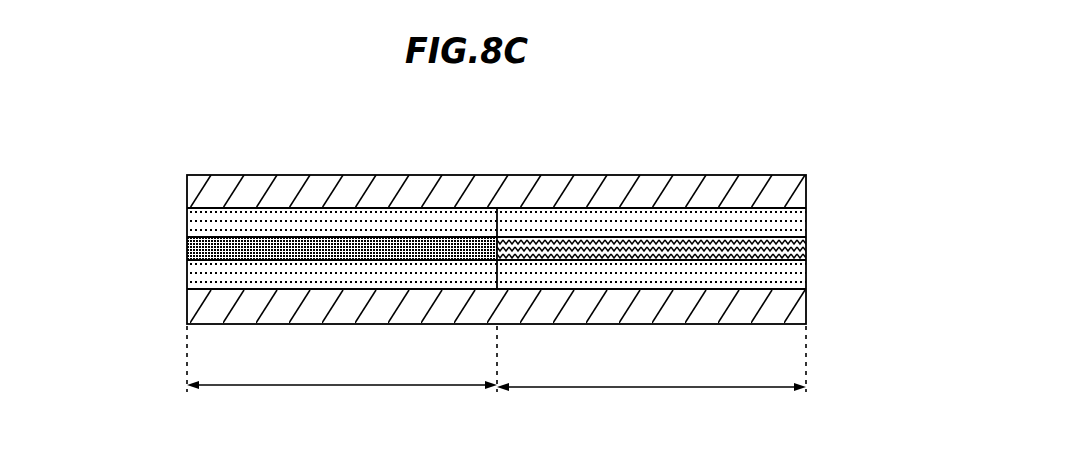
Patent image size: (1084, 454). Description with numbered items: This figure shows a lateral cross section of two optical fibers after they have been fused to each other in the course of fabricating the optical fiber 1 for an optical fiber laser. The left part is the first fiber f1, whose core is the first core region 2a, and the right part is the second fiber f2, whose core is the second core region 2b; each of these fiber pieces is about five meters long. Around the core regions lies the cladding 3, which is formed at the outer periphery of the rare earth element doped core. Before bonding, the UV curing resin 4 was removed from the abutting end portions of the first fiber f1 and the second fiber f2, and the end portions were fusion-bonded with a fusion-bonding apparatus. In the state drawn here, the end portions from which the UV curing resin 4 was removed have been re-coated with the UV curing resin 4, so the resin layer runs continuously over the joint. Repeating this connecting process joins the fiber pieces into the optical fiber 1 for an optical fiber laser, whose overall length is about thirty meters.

The optical fiber for an optical fiber laser 1 is at (796, 158).
The first core region 2a is at (258, 262).
The second core region 2b is at (736, 263).
The cladding 3 is at (507, 232).
The UV curing resin 4 is at (663, 176).
The fiber 1 f1 is at (342, 378).
The fiber 2 f2 is at (651, 378).